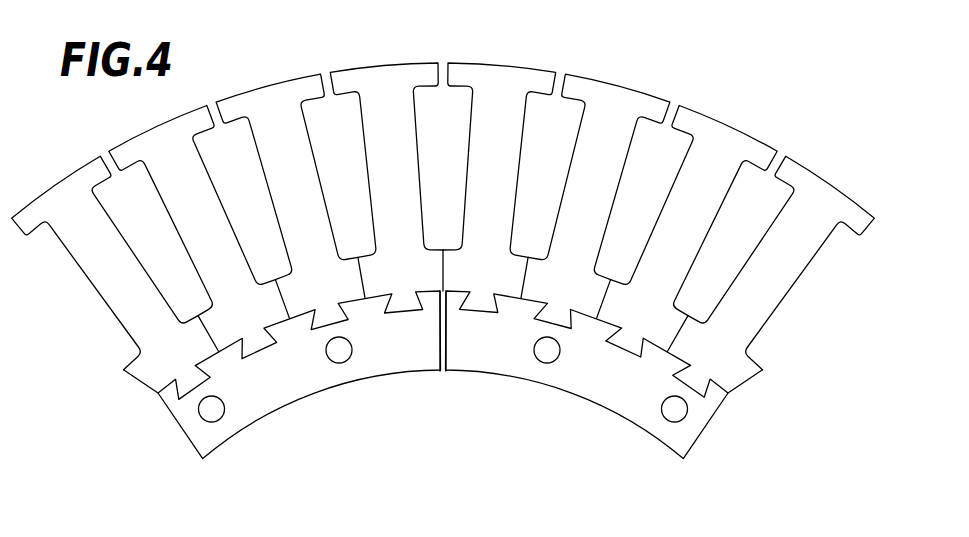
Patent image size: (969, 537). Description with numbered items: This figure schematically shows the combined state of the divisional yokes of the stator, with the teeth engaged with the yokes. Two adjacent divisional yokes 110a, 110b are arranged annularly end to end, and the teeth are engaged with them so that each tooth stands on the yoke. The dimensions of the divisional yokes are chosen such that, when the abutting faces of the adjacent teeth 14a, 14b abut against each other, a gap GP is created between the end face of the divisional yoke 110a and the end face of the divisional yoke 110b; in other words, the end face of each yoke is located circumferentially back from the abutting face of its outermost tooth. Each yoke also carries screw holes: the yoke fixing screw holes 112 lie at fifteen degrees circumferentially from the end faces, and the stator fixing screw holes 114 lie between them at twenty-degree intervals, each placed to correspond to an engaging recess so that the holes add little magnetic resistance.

The tooth 14a is at (372, 63).
The tooth 14b is at (506, 65).
The divisional yoke 110a is at (282, 408).
The divisional yoke 110b is at (597, 405).
The yoke fixing screw hole 112 is at (346, 363).
The stator fixing screw hole 114 is at (221, 419).
The gap GP is at (462, 383).